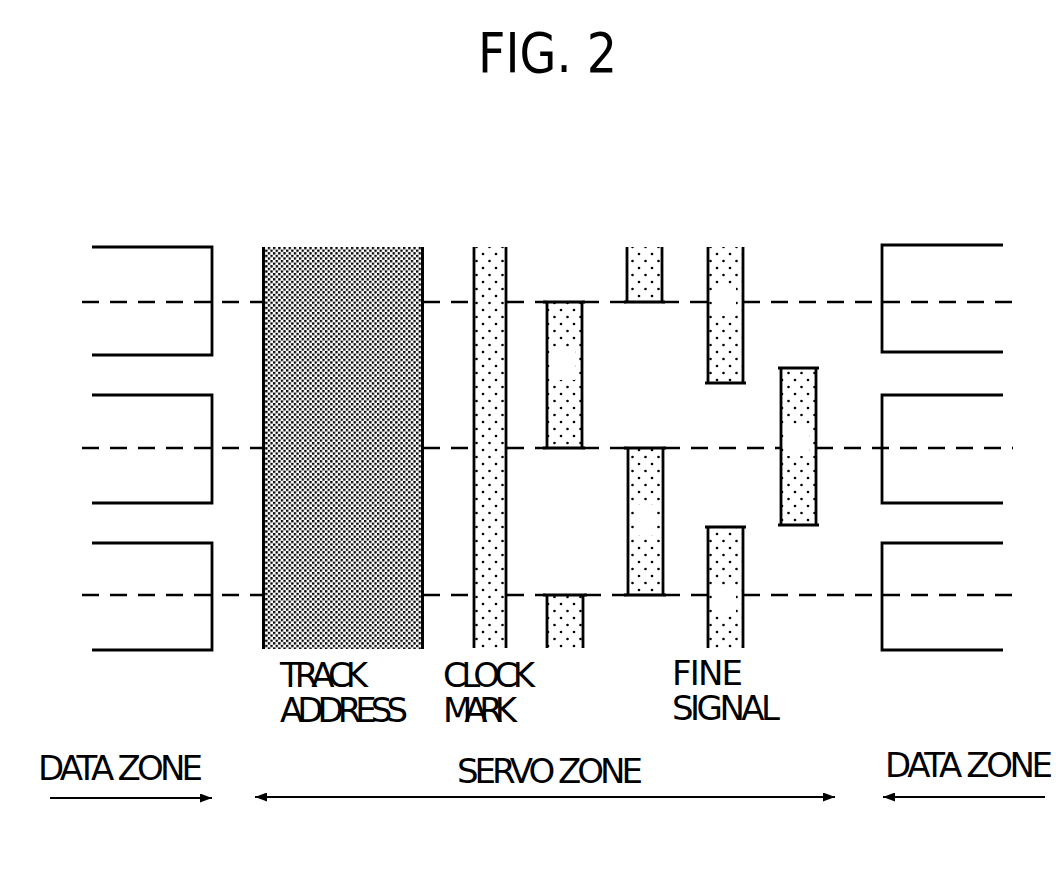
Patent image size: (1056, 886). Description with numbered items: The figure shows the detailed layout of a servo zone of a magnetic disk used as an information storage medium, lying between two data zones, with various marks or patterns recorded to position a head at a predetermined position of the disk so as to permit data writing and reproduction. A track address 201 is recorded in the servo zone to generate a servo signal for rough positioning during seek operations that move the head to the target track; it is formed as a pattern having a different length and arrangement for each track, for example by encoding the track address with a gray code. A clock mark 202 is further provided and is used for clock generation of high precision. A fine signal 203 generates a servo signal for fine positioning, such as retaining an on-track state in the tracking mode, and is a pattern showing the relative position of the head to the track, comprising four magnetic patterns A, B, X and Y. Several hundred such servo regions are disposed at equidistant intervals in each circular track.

The track address 201 is at (347, 245).
The clock mark 202 is at (488, 245).
The fine signal 203 is at (673, 244).